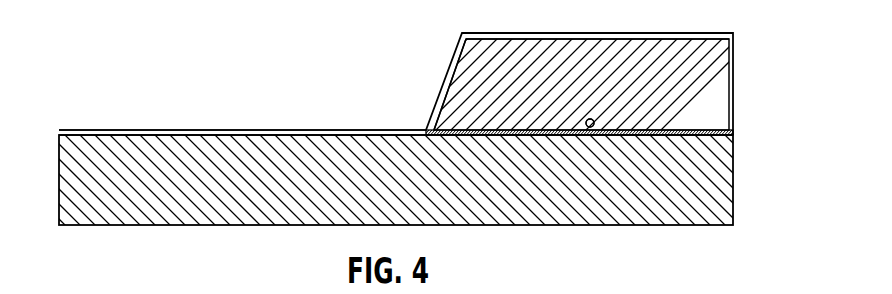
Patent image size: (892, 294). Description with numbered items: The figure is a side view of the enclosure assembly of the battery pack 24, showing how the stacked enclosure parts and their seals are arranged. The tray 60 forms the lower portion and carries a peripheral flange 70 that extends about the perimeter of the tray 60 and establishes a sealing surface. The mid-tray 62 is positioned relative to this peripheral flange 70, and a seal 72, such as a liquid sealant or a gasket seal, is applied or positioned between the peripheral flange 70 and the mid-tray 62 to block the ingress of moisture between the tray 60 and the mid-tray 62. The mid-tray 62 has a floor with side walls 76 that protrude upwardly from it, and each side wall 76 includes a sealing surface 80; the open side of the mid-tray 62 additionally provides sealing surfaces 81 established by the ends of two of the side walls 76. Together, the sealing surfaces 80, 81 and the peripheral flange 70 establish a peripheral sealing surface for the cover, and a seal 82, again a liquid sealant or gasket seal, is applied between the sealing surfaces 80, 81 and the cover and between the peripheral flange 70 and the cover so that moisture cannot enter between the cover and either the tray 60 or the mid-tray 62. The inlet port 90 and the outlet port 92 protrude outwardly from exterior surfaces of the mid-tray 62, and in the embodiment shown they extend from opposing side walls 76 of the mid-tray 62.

The battery pack 24 is at (369, 65).
The tray 60 is at (716, 195).
The mid-tray 62 is at (717, 76).
The peripheral flange 70 is at (245, 140).
The seal 72 is at (703, 147).
The side walls 76 is at (722, 108).
The sealing surface 80 is at (588, 40).
The sealing surfaces 81 is at (448, 90).
The seal 82 is at (216, 129).
The inlet port 90 is at (590, 119).
The outlet port 92 is at (590, 119).